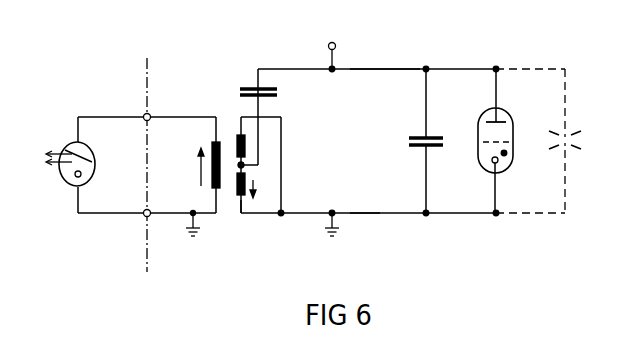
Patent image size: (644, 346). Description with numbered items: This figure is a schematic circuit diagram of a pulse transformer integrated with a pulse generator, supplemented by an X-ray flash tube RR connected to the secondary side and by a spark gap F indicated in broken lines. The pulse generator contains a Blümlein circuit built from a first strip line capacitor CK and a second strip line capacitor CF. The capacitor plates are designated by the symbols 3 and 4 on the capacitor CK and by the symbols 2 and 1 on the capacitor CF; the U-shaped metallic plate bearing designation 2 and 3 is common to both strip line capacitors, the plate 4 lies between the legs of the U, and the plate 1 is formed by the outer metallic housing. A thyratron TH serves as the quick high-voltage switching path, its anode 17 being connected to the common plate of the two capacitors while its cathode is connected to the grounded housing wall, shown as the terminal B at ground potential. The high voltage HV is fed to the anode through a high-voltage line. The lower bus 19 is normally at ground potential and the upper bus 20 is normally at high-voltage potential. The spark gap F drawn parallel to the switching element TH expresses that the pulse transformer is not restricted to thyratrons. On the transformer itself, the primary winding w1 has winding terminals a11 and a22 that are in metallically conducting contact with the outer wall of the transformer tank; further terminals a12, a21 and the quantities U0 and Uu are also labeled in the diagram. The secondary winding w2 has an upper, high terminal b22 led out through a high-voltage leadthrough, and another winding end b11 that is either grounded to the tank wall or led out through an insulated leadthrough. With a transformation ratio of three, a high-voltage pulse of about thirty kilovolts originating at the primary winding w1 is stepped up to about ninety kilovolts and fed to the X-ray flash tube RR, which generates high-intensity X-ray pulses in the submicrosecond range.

The X-ray flash tube RR is at (59, 184).
The upper winding terminal of the secondary winding b22 is at (150, 113).
The other winding end of the secondary winding b11 is at (153, 218).
The secondary winding w2 is at (217, 140).
The input voltage U0 is at (199, 163).
The primary winding w1 is at (266, 152).
The winding terminal a12 is at (243, 165).
The winding terminal a21 is at (300, 166).
The winding terminal of the primary winding a22 is at (282, 210).
The winding terminal of the primary winding a11 is at (241, 214).
The transformed voltage Uu is at (257, 183).
The first strip line capacitor CK is at (254, 87).
The capacitor plate 3 is at (271, 88).
The capacitor plate 4 is at (271, 97).
The high voltage HV is at (333, 42).
The terminal at ground potential B is at (342, 215).
The lower bus 19 is at (362, 214).
The upper bus 20 is at (377, 68).
The strip line capacitor CF is at (434, 136).
The capacitor plate 2 is at (418, 132).
The capacitor plate 1 is at (416, 150).
The thyratron TH is at (470, 203).
The anode 17 is at (496, 84).
The spark gap F is at (575, 138).